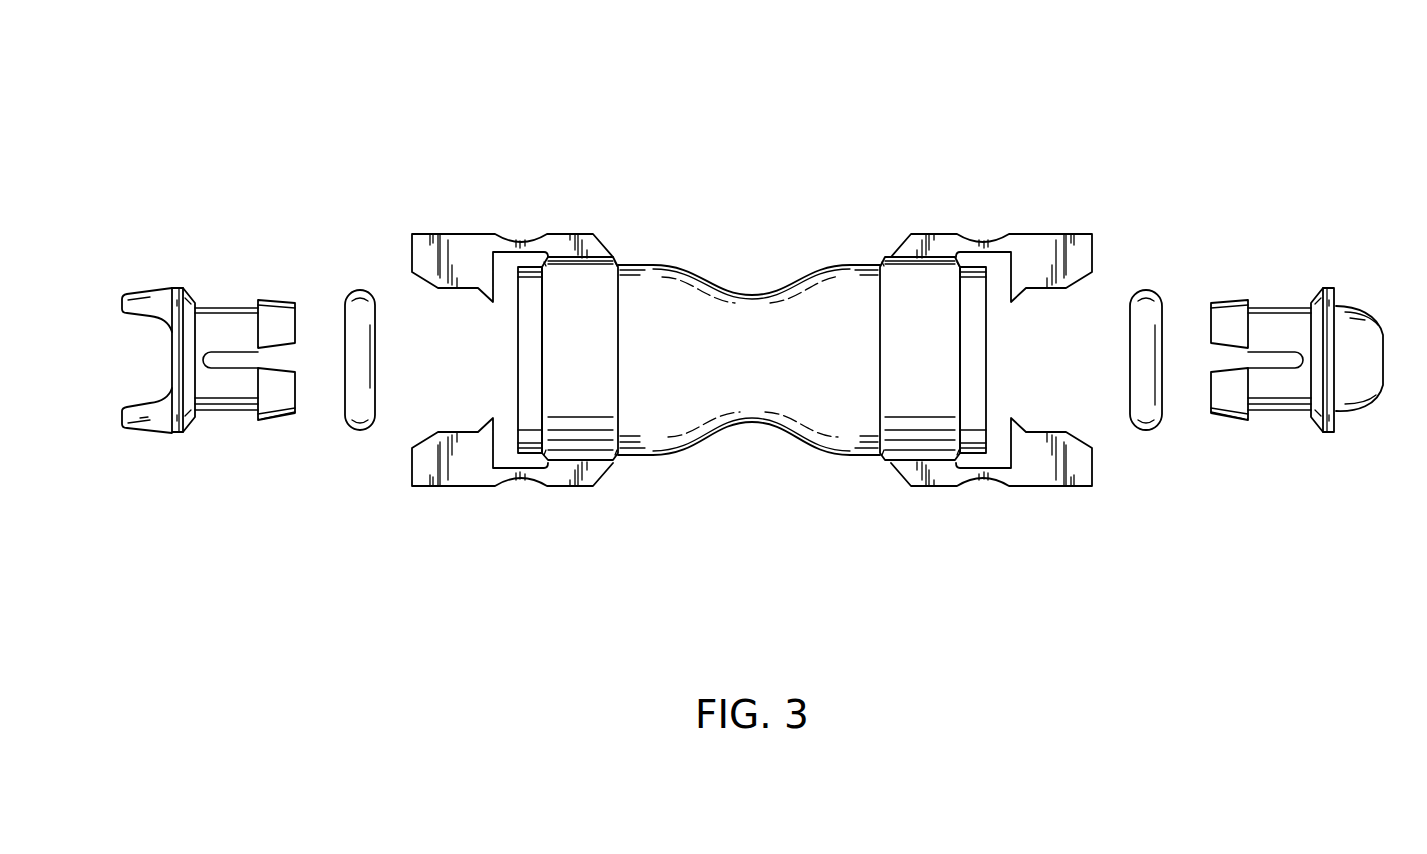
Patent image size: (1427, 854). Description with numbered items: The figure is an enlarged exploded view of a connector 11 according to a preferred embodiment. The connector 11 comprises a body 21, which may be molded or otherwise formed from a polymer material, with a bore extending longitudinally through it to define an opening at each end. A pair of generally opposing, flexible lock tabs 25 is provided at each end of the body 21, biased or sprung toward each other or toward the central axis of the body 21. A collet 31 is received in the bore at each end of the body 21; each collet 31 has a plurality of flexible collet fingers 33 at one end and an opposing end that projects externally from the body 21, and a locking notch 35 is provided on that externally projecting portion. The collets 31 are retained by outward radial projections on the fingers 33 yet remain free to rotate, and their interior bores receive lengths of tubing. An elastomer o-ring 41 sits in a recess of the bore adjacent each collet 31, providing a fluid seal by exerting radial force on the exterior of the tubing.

The connector 11 is at (1026, 100).
The body 21 is at (667, 307).
The flexible lock tabs 25 is at (468, 246).
The collet 31 is at (192, 422).
The flexible collet fingers 33 is at (272, 298).
The locking notch 35 is at (153, 380).
The elastomer o-ring 41 is at (357, 430).